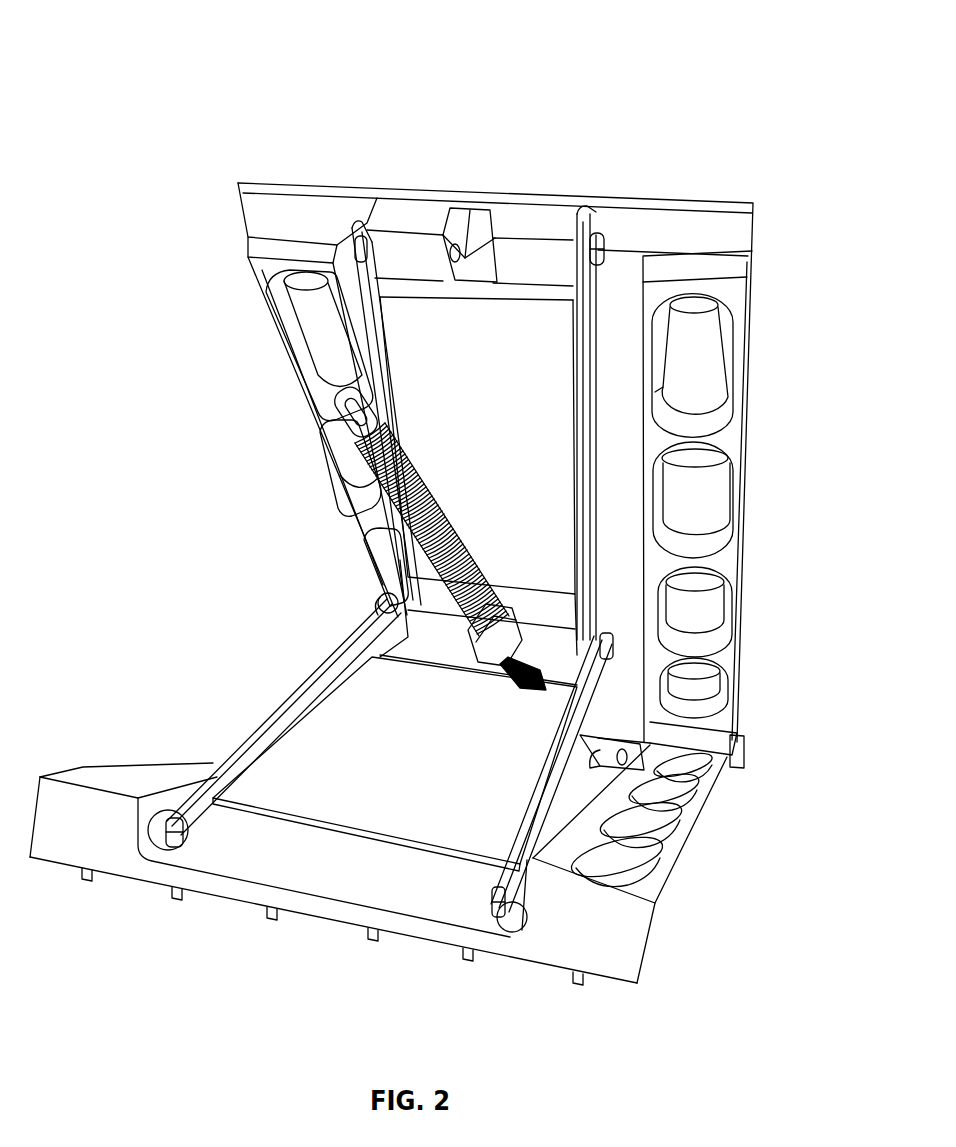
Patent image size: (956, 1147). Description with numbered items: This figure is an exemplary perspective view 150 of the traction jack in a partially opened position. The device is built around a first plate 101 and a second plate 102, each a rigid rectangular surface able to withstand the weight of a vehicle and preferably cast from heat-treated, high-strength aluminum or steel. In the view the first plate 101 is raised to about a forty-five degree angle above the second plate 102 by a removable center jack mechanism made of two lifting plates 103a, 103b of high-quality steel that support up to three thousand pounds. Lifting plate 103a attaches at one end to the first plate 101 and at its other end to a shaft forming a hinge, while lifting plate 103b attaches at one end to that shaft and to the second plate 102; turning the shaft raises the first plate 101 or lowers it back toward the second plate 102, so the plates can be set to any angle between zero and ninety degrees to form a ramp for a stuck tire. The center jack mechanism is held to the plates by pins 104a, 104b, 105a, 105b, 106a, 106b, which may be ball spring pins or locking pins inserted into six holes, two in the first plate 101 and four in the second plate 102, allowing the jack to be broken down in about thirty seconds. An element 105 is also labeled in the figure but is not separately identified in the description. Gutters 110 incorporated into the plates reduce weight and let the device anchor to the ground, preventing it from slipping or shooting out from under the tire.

The perspective view 150 is at (152, 34).
The first plate 101 is at (757, 240).
The second plate 102 is at (657, 920).
The lifting plate 103a is at (413, 397).
The lifting plate 103b is at (340, 720).
The pin 104a is at (597, 236).
The pin 104b is at (353, 228).
The spring 105 is at (340, 400).
The pin 105a is at (606, 640).
The pin 105b is at (378, 603).
The pin 106a is at (495, 905).
The pin 106b is at (183, 838).
The gutters 110 is at (728, 352).